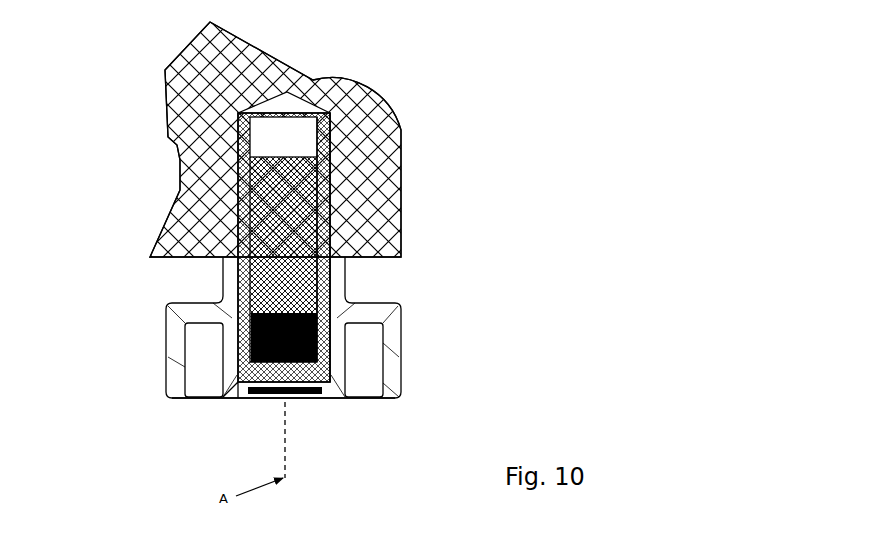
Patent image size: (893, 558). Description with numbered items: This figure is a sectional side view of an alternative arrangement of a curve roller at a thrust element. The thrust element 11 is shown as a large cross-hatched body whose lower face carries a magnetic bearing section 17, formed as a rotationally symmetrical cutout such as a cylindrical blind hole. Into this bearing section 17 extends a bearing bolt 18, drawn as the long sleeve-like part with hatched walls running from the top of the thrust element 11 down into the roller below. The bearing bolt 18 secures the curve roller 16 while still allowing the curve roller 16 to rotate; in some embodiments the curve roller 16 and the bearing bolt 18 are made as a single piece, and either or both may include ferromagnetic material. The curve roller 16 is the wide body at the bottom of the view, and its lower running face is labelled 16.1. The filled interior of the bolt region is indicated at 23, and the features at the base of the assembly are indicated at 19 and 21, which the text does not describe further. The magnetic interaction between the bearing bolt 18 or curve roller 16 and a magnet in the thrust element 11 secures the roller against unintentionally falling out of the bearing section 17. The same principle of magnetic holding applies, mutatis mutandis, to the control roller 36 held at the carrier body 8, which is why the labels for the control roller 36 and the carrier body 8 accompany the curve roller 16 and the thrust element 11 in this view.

The thrust element 11 is at (318, 138).
The carrier body 8 is at (372, 93).
The bearing bolt 18 is at (237, 217).
The cartridge filling 23 is at (258, 250).
The magnetic bearing section 17 is at (335, 222).
The curve roller 16 is at (235, 331).
The control roller 36 is at (147, 352).
The cartridge bottom 19 is at (235, 385).
The sealing bar 21 is at (297, 398).
The bottom edge of body 16.1 is at (337, 403).